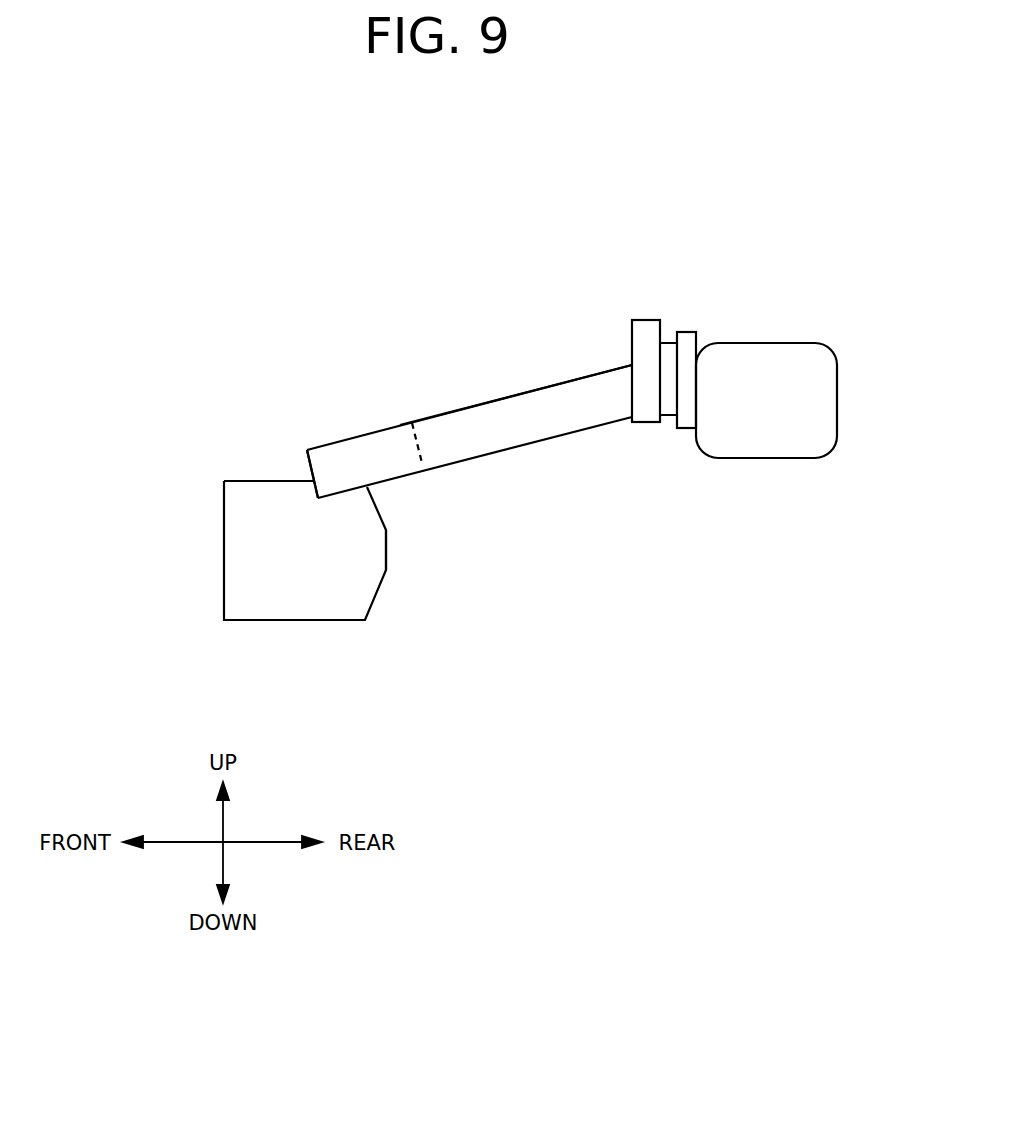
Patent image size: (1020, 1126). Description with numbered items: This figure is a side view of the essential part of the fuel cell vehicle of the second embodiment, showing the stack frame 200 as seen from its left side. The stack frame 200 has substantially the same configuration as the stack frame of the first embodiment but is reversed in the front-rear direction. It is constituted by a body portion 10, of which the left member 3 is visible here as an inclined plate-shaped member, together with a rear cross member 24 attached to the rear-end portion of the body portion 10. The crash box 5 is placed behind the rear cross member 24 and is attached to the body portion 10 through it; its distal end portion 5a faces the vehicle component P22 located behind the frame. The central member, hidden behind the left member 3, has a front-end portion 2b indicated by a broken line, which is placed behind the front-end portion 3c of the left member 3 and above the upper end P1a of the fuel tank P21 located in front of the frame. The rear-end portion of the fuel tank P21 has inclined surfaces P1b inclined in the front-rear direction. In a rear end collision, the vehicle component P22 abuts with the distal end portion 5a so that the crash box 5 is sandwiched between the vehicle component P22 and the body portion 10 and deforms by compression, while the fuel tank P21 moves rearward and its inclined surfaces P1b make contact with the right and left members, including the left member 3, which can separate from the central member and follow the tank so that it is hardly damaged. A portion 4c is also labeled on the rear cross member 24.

The stack frame 200 is at (769, 179).
The rear cross member 24 is at (641, 320).
The crash box 5 is at (669, 343).
The distal end portion of the crash box 5a is at (690, 332).
The vehicle component P22 is at (778, 343).
The left member 3 is at (500, 398).
The body portion 10 is at (573, 378).
The front-end portion of the central member 2b is at (400, 418).
The upper end of the fuel tank P1a is at (230, 481).
The front-end portion of the left member 3c is at (305, 455).
The engaging portion 4c is at (645, 385).
The inclined surfaces P1b is at (428, 549).
The fuel tank P21 is at (295, 622).